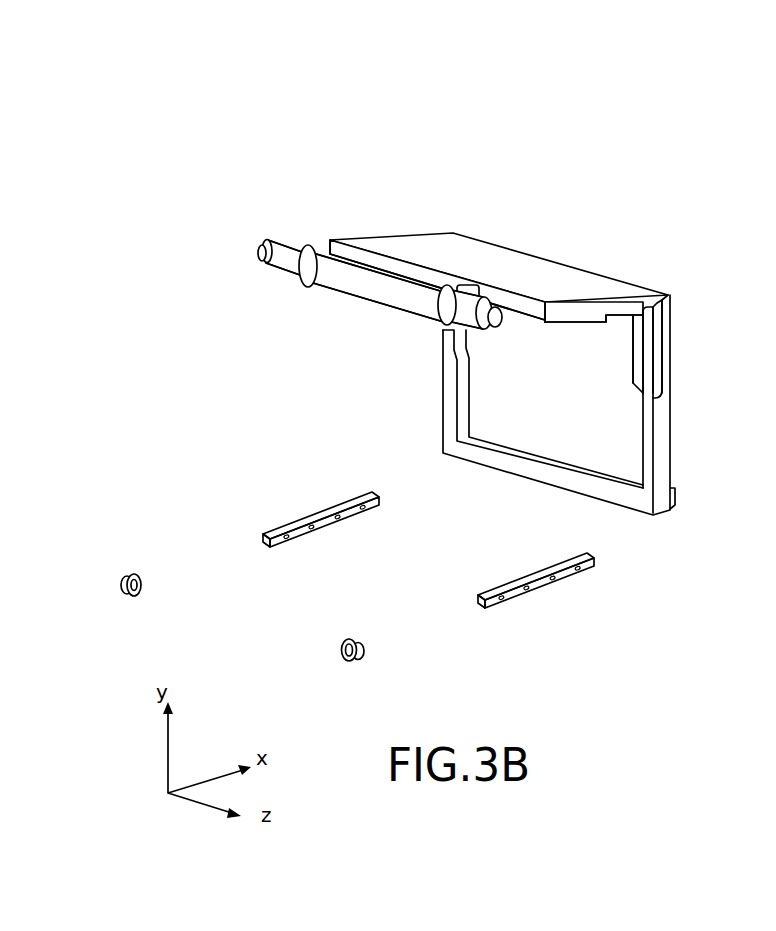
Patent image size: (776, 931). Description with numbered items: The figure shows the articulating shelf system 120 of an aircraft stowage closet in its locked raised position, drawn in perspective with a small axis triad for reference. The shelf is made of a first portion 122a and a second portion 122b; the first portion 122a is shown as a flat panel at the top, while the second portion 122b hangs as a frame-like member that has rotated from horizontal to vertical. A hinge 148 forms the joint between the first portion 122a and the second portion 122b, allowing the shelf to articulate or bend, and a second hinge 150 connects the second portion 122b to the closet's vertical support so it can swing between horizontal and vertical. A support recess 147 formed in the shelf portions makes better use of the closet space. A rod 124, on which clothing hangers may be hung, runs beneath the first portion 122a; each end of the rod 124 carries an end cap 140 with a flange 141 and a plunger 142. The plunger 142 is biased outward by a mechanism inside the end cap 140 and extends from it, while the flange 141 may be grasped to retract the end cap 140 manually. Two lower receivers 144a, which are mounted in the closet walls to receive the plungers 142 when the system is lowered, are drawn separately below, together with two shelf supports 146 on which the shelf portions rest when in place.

The articulating shelf system 120 is at (312, 185).
The first portion 122a is at (457, 257).
The second portion 122b is at (673, 358).
The rod 124 is at (388, 295).
The end cap 140 is at (273, 263).
The flange 141 is at (307, 282).
The plunger 142 is at (260, 252).
The lower receivers 144a is at (343, 656).
The shelf support 146 is at (478, 598).
The support recess 147 is at (657, 380).
The hinge 148 is at (667, 297).
The second hinge 150 is at (675, 503).